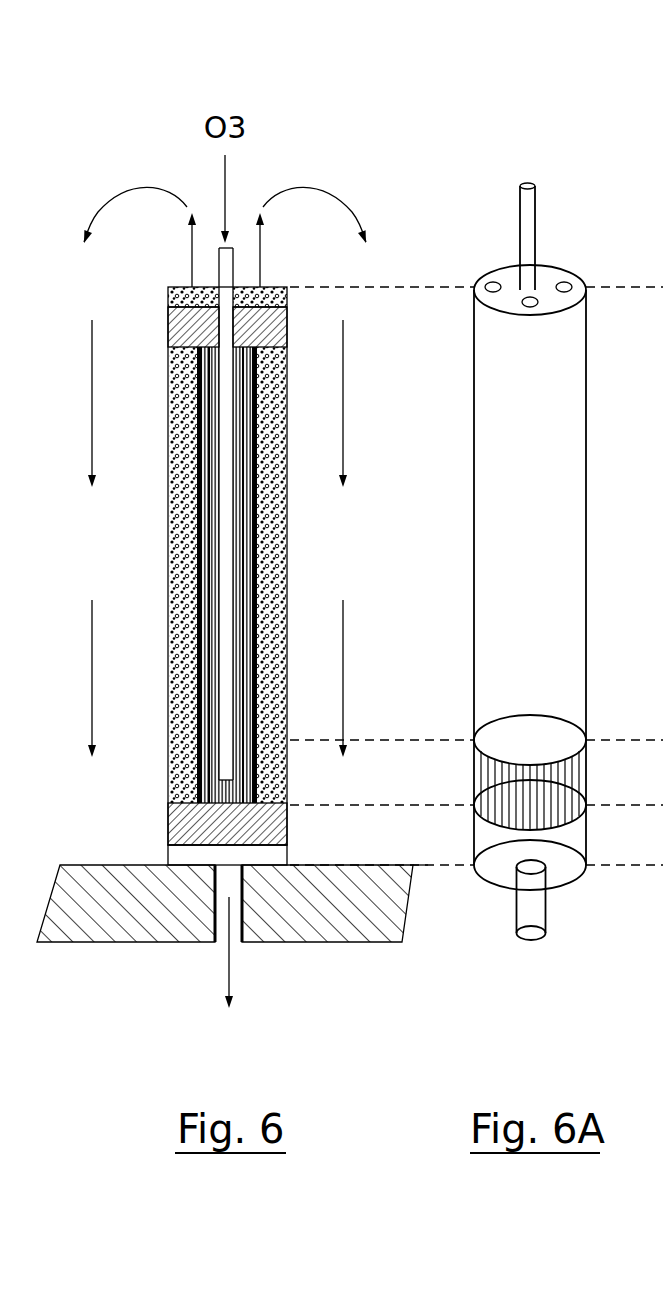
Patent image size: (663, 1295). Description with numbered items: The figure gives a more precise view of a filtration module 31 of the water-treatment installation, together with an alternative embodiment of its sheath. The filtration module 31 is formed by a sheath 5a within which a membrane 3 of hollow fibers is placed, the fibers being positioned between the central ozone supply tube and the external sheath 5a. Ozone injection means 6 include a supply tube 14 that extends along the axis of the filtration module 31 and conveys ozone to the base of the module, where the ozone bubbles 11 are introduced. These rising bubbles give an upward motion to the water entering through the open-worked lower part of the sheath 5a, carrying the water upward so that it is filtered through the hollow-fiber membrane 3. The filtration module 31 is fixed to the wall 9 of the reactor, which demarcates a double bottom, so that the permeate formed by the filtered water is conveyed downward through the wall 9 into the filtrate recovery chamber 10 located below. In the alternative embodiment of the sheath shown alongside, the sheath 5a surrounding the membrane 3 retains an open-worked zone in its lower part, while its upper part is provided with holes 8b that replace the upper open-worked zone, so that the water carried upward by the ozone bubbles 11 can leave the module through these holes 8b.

In FIG. 6, the ozone injection means 6 is at (243, 107).
In FIG. 6, the ozone bubbles 11 is at (195, 574).
In FIG. 6, the supply tube 14 is at (284, 554).
In FIG. 6, the membrane 3 is at (347, 788).
In FIG. 6, the wall 9 is at (58, 905).
In FIG. 6, the filtrate recovery chamber 10 is at (295, 1012).
In FIG. 6A, the filtration module 31 is at (462, 472).
In FIG. 6A, the holes 8b is at (562, 285).
In FIG. 6A, the sheath 5a is at (474, 620).